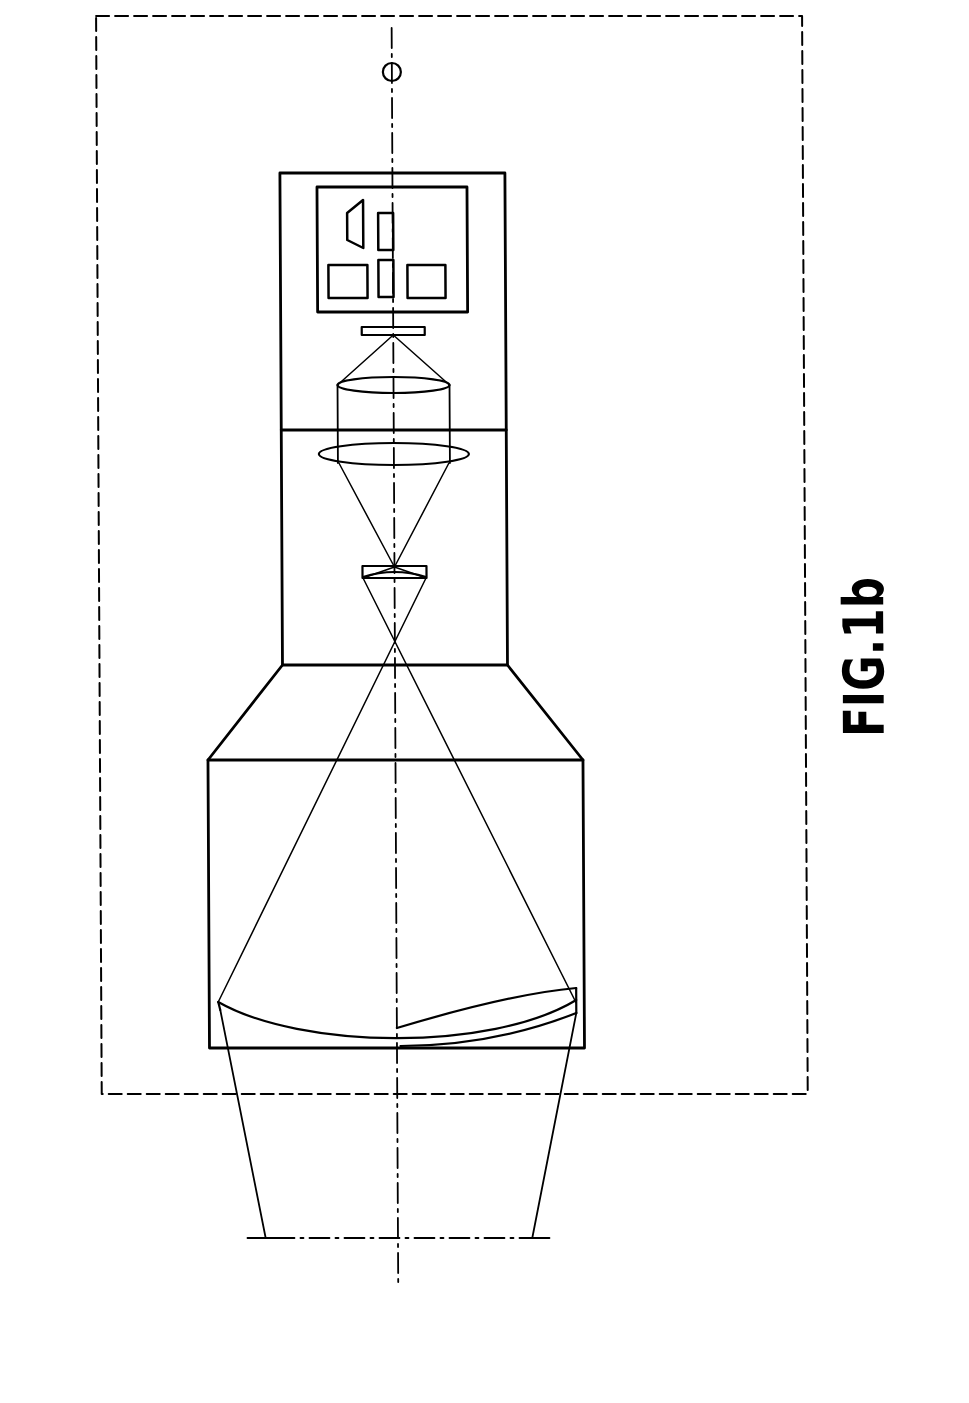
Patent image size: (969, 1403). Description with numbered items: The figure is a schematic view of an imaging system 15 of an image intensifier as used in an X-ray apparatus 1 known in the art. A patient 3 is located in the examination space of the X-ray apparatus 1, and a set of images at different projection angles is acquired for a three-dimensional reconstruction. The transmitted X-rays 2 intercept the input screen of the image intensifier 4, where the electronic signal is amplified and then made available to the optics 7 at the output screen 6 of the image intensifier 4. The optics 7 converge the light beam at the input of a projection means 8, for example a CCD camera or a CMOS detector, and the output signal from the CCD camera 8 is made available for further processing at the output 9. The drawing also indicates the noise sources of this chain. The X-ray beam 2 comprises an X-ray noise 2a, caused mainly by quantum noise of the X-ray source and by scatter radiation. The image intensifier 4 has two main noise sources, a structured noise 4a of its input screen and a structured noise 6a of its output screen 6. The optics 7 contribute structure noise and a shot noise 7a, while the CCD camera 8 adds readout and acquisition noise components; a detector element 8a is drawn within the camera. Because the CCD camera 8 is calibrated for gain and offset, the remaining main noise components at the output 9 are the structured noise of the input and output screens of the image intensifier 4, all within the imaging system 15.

The X-ray apparatus 1 is at (116, 1175).
The X-ray beam 2 is at (251, 1203).
The X-ray noise 2a is at (466, 1148).
The patient 3 is at (303, 1248).
The image intensifier 4 is at (397, 1007).
The structured noise of the input screen 4a is at (571, 990).
The output screen 6 is at (379, 596).
The structured noise of the output screen 6a is at (404, 574).
The optics 7 is at (336, 437).
The shot noise 7a is at (393, 336).
The projection means 8 is at (376, 249).
The detector element 8a is at (404, 244).
The output 9 is at (382, 70).
The imaging system 15 is at (94, 552).